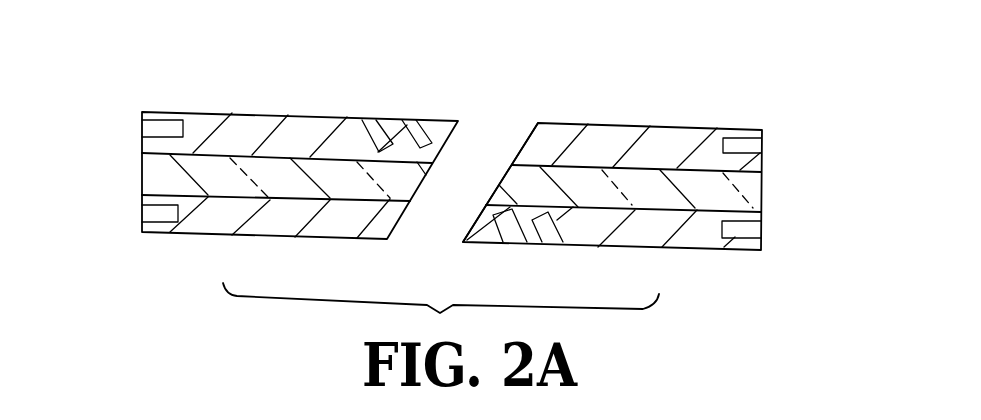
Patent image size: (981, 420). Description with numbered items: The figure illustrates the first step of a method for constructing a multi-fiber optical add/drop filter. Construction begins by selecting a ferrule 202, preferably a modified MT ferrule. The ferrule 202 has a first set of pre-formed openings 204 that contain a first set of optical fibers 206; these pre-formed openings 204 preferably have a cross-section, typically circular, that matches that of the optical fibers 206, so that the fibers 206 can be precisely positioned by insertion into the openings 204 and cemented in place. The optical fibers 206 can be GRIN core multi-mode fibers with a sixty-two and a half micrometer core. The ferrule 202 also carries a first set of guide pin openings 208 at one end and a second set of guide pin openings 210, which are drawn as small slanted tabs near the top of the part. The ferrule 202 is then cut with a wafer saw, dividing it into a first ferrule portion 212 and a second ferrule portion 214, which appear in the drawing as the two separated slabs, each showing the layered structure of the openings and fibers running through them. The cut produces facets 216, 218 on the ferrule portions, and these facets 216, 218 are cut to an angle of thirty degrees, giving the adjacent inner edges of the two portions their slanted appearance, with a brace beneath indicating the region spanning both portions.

The ferrule 202 is at (642, 32).
The pre-formed openings 204 is at (707, 216).
The optical fibers 206 is at (735, 197).
The first set of guide pin openings 208 is at (140, 135).
The second set of guide pin openings 210 is at (372, 118).
The first ferrule portion 212 is at (673, 126).
The second ferrule portion 214 is at (212, 112).
The facet 216 is at (523, 143).
The facet 218 is at (406, 215).